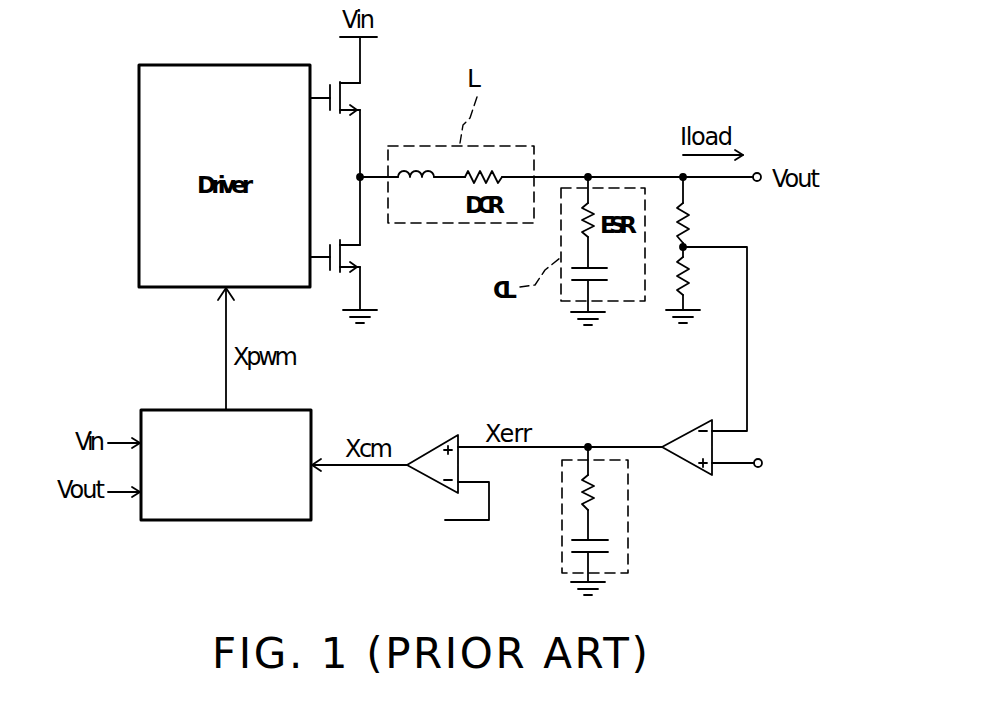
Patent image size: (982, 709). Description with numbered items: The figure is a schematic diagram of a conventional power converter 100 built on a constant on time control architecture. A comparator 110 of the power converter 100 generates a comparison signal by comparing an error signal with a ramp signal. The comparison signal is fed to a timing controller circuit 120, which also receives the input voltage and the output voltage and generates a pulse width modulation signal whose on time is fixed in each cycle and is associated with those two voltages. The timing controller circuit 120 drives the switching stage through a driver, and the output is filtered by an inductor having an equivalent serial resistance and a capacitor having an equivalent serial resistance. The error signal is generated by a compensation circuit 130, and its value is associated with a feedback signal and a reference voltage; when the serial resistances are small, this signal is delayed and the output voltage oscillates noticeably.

The power converter 100 is at (722, 557).
The comparator 110 is at (425, 447).
The timing controller circuit 120 is at (292, 410).
The compensation circuit 130 is at (560, 532).